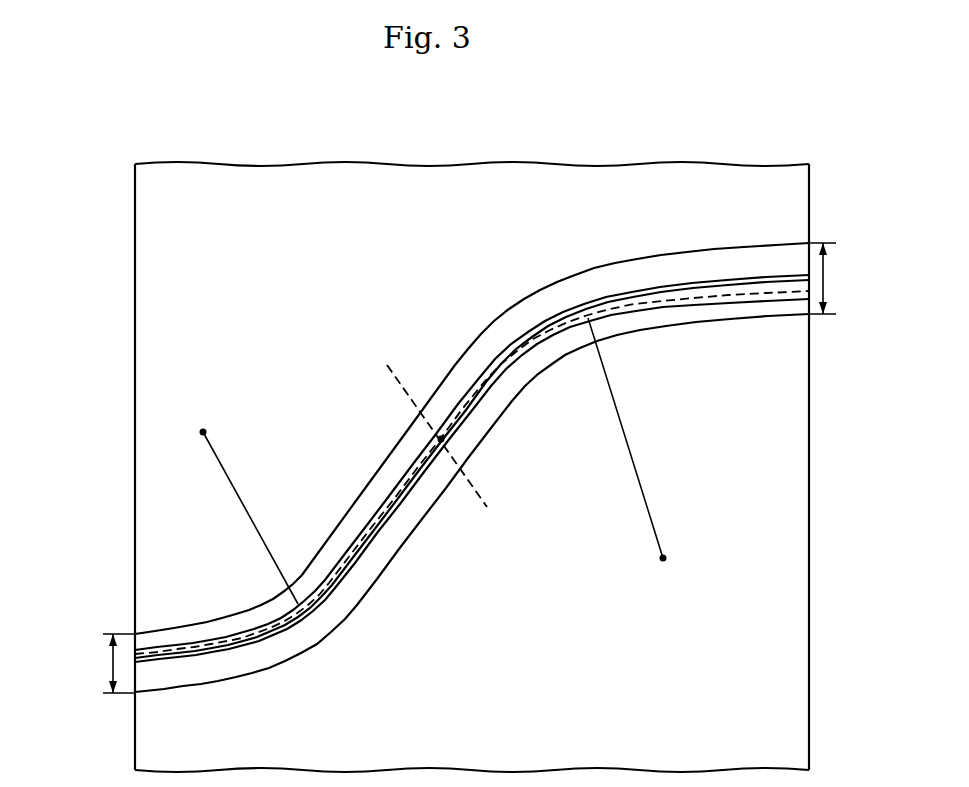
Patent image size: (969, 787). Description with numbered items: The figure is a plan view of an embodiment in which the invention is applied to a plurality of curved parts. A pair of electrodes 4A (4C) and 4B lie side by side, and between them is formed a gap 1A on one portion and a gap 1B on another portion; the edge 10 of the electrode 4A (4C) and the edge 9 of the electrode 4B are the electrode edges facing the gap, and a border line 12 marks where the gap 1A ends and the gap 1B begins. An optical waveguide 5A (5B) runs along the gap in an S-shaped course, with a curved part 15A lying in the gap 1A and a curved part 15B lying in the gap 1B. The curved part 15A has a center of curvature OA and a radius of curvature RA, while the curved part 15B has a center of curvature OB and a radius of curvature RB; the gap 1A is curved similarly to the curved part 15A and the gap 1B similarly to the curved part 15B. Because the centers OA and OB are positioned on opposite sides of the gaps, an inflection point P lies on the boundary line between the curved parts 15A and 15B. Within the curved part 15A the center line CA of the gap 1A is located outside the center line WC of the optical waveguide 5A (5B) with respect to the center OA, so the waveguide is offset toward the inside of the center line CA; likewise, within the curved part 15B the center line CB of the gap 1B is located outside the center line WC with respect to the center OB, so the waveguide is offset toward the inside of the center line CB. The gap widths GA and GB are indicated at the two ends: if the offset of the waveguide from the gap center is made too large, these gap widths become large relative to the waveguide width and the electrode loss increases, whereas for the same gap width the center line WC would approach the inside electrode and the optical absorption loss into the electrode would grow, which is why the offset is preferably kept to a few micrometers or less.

The electrode 4A is at (308, 296).
The electrode 4C is at (308, 296).
The electrode 4B is at (590, 586).
The edge of electrode 10 is at (241, 612).
The edge of electrode 9 is at (321, 629).
The optical waveguide 5A is at (472, 469).
The optical waveguide 5B is at (410, 473).
The curved part 15A is at (368, 560).
The curved part 15B is at (653, 291).
The inflection point P is at (441, 437).
The border line 12 is at (478, 490).
The center line of gap CB is at (495, 358).
The center line of gap CA is at (215, 658).
The gap 1A is at (291, 572).
The gap 1B is at (595, 262).
The gap width GA is at (78, 663).
The gap width GB is at (829, 297).
The center of curvature OA is at (193, 415).
The center of curvature OB is at (683, 570).
The radius of curvature RA is at (218, 452).
The radius of curvature RB is at (625, 405).
The center line of optical waveguide WC is at (190, 648).